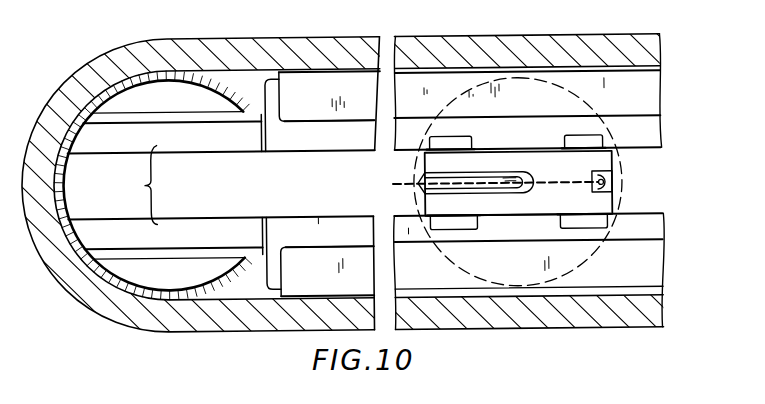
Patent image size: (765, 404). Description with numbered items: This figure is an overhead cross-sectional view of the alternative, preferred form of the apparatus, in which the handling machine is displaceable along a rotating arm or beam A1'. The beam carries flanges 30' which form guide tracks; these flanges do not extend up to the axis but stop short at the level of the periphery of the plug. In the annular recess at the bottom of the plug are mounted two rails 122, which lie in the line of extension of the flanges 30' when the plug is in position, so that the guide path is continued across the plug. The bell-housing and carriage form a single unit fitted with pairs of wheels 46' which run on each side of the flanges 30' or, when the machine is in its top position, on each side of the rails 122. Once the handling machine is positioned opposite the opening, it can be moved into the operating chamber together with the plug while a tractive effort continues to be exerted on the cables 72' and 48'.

The rotating arm or beam A1' is at (382, 202).
The flanges 30' is at (365, 183).
The rails 122 is at (132, 186).
The cable 72' is at (478, 171).
The wheels 46' is at (627, 169).
The cable 48' is at (518, 182).